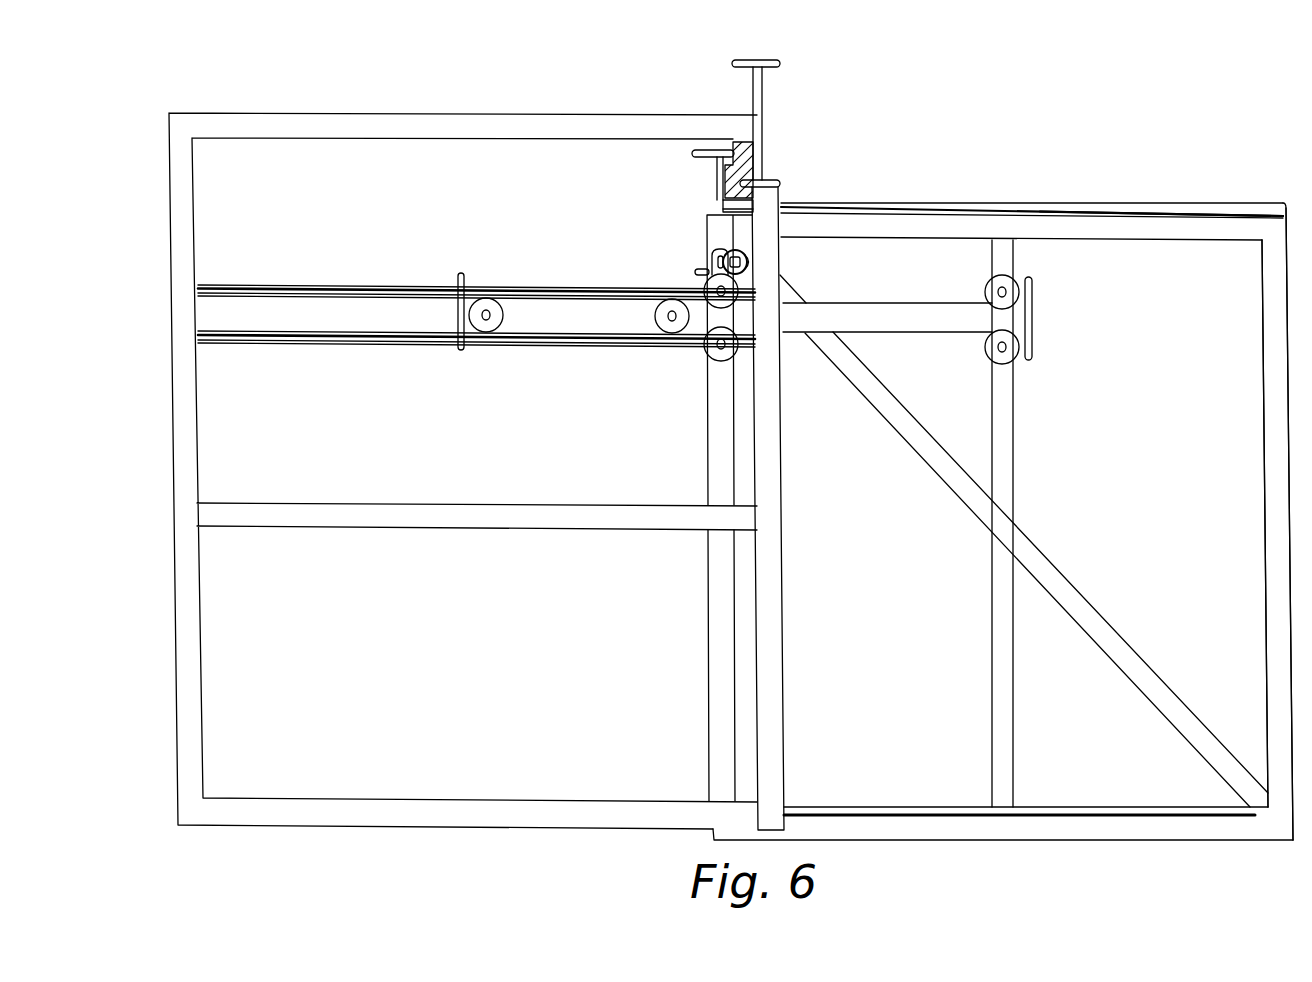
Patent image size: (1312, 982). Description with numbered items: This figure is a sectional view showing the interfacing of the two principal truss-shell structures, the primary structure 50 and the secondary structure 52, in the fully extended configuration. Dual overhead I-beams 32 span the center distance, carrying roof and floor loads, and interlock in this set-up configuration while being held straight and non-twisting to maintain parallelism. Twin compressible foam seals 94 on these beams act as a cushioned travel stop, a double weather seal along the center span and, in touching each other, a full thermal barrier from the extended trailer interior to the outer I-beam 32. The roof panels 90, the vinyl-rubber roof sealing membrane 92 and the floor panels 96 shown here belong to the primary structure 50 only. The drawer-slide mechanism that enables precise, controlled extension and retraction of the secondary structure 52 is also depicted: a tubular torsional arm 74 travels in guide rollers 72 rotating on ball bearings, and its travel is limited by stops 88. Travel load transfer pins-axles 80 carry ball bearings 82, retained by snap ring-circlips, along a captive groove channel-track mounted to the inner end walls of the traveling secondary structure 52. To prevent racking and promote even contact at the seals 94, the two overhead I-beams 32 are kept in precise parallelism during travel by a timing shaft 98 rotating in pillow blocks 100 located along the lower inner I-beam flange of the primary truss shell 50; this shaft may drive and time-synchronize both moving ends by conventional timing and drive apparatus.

The primary principal framework structure 50 is at (1075, 850).
The secondary principal framework structure 52 is at (428, 92).
The I-beam 32 is at (713, 212).
The guide rollers 72 is at (712, 352).
The tubular torsional arm 74 is at (860, 318).
The travel load transfer pins-axles 80 is at (493, 330).
The ball bearings 82 is at (502, 312).
The stops 88 is at (457, 306).
The roof panels 90 is at (1055, 212).
The vinyl-rubber roof sealing membrane 92 is at (1215, 205).
The twin compressible foam seals 94 is at (700, 150).
The floor panels 96 is at (972, 812).
The timing shaft 98 is at (756, 258).
The pillow blocks 100 is at (714, 256).